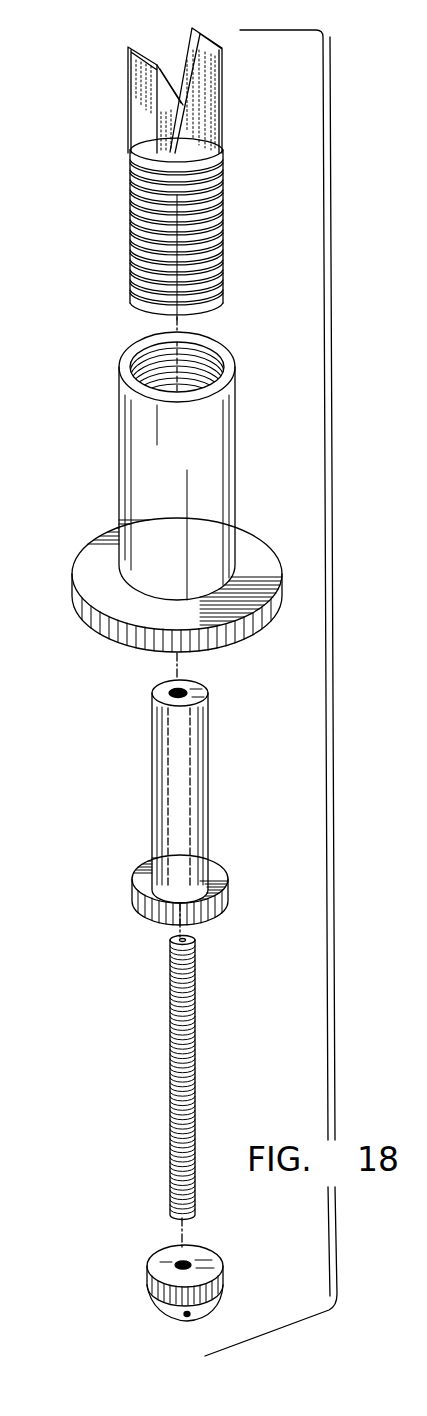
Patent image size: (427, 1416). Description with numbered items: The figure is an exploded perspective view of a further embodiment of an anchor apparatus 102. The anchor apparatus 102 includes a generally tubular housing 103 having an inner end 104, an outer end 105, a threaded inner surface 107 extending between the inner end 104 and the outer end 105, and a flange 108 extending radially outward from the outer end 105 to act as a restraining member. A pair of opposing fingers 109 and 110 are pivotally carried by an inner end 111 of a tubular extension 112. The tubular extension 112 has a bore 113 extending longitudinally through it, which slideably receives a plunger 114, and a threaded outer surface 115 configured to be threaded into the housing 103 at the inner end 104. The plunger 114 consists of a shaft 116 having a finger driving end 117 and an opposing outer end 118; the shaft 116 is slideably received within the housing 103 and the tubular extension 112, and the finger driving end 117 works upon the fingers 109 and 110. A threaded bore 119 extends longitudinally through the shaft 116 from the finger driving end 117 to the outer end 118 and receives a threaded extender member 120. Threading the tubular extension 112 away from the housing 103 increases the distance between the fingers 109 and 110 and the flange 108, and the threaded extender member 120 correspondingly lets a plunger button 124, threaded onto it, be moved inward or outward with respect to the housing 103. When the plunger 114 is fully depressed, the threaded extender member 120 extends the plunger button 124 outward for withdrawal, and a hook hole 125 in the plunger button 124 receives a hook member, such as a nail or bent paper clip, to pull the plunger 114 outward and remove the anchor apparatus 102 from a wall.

The anchor apparatus 102 is at (298, 799).
The tubular housing 103 is at (120, 445).
The inner end 104 is at (230, 358).
The outer end 105 is at (238, 577).
The threaded inner surface 107 is at (210, 350).
The flange 108 is at (117, 525).
The finger 109 is at (133, 67).
The finger 110 is at (240, 67).
The inner end 111 is at (223, 130).
The tubular extension 112 is at (223, 228).
The bore 113 is at (175, 103).
The plunger 114 is at (218, 734).
The threaded outer surface 115 is at (223, 268).
The shaft 116 is at (152, 830).
The finger driving end 117 is at (155, 686).
The outer end 118 is at (210, 870).
The threaded bore 119 is at (176, 772).
The threaded extender member 120 is at (170, 1126).
The plunger button 124 is at (208, 1262).
The hook hole 125 is at (185, 1322).